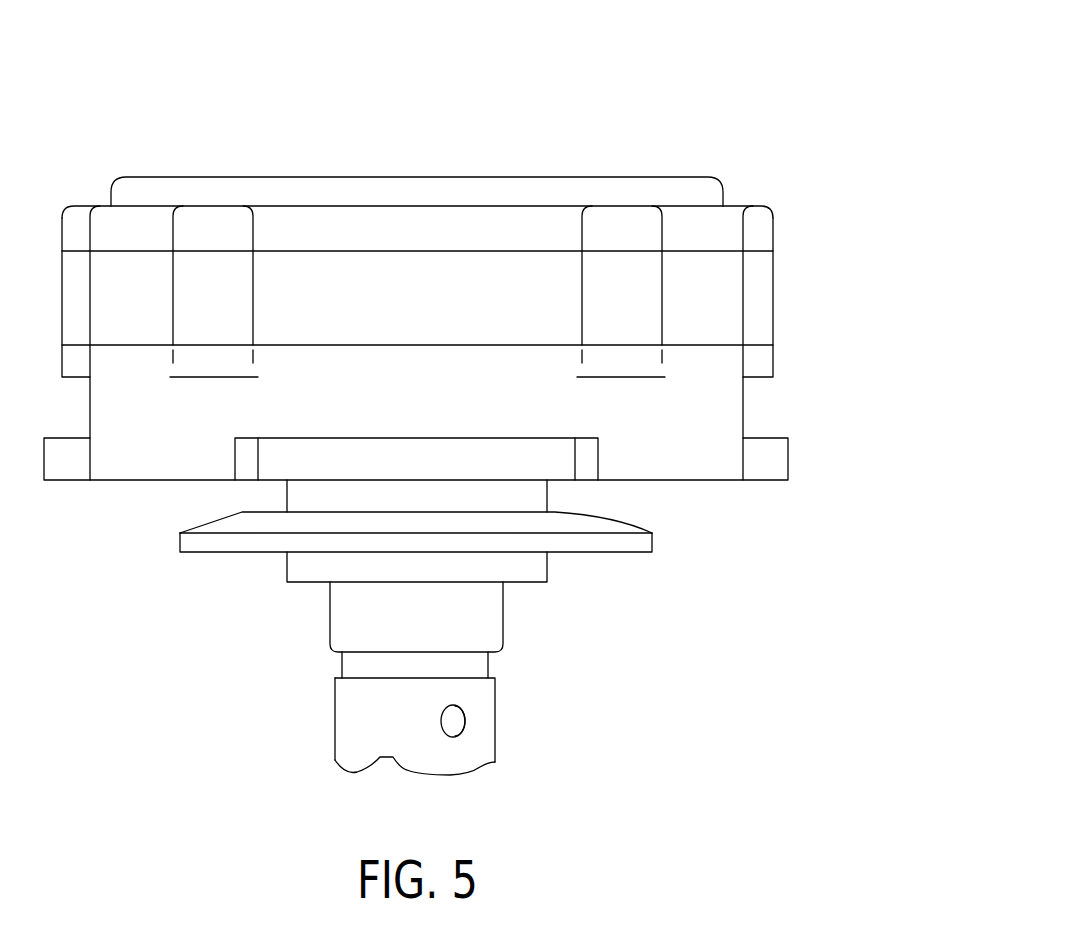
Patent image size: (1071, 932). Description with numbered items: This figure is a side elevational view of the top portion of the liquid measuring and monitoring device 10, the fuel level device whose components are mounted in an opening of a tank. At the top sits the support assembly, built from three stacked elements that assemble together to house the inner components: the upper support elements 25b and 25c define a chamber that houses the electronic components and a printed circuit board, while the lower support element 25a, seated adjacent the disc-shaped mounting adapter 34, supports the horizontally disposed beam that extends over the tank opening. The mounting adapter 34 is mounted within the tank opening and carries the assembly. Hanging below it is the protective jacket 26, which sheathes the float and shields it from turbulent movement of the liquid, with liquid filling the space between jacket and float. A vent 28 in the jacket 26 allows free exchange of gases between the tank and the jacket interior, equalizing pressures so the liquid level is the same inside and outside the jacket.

The liquid measuring and monitoring device 10 is at (650, 88).
The lower support element 25a is at (745, 413).
The upper support element 25b is at (745, 296).
The upper support element 25c is at (673, 181).
The protective jacket 26 is at (335, 725).
The vent 28 is at (467, 718).
The mounting adapter 34 is at (653, 537).